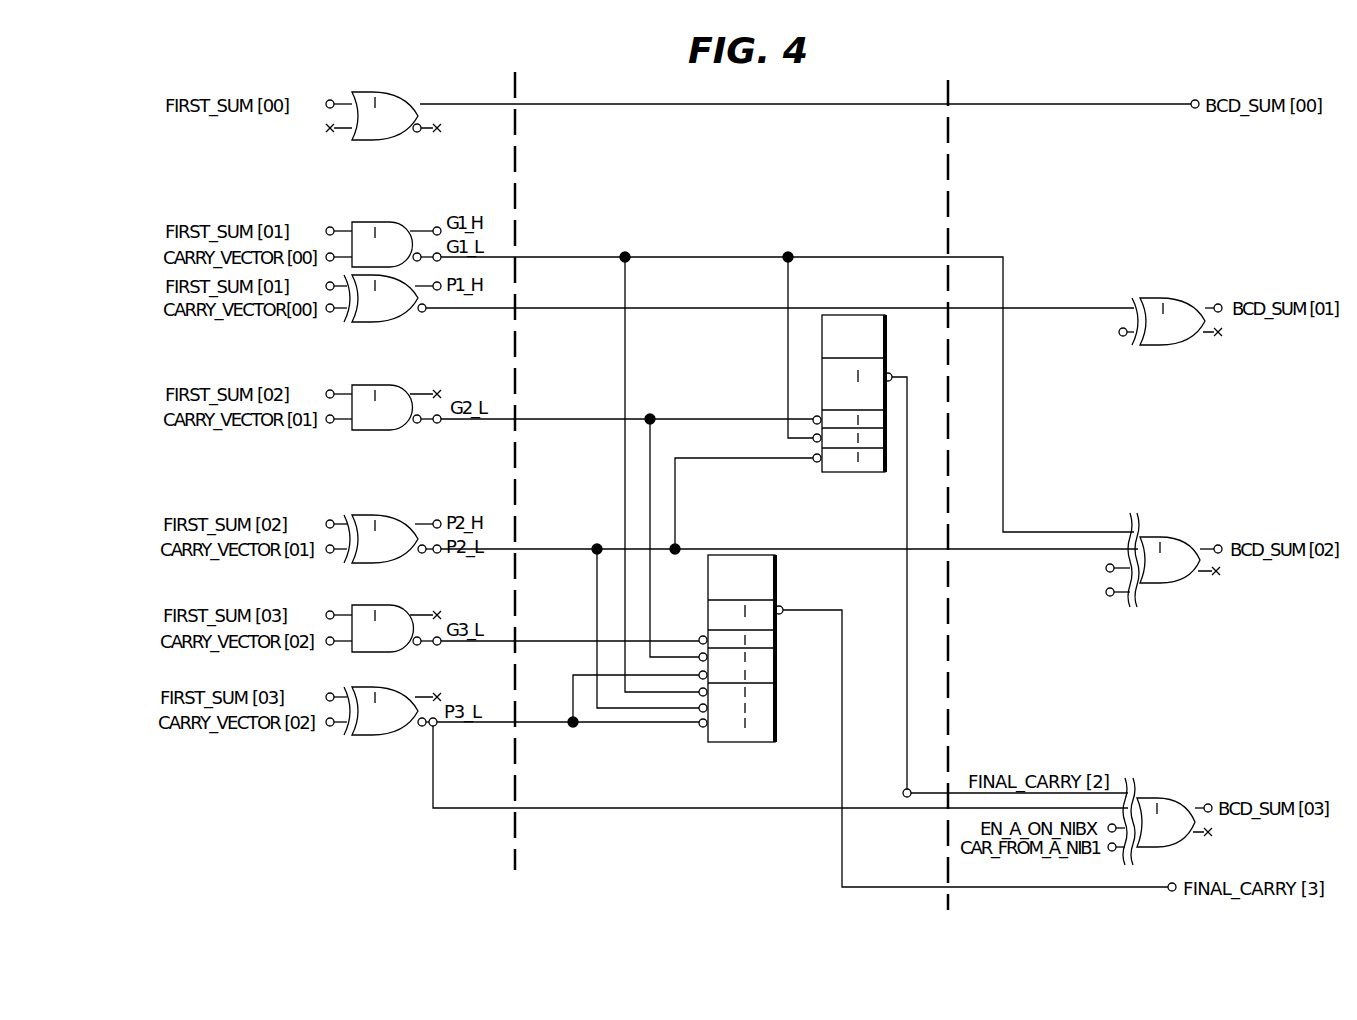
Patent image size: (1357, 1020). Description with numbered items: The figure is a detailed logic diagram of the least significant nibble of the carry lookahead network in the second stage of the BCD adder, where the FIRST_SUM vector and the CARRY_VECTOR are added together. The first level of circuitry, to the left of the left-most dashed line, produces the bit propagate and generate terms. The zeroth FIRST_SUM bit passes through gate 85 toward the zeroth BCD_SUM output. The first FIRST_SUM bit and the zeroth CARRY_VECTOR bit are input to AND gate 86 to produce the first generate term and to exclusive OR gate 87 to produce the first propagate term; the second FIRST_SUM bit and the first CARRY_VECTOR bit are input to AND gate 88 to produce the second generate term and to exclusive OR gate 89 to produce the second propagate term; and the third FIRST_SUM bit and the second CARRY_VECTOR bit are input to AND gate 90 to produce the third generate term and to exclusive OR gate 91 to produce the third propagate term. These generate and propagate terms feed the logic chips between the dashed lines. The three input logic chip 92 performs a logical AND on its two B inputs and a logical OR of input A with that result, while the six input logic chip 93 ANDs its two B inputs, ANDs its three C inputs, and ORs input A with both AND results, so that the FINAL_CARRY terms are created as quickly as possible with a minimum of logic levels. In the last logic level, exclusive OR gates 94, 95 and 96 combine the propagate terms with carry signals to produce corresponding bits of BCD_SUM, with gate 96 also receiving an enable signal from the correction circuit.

The OR gate L100 85 is at (393, 92).
The AND gate 86 is at (387, 222).
The exclusive OR gate 87 is at (383, 322).
The AND gate 88 is at (385, 385).
The exclusive OR gate 89 is at (388, 515).
The AND gate 90 is at (392, 605).
The exclusive OR gate 91 is at (380, 735).
The three input logic chip 92 is at (886, 342).
The six input logic chip 93 is at (777, 588).
The exclusive OR gate 94 is at (1182, 298).
The exclusive-OR gate L120 95 is at (1172, 537).
The exclusive OR gate 96 is at (1168, 798).